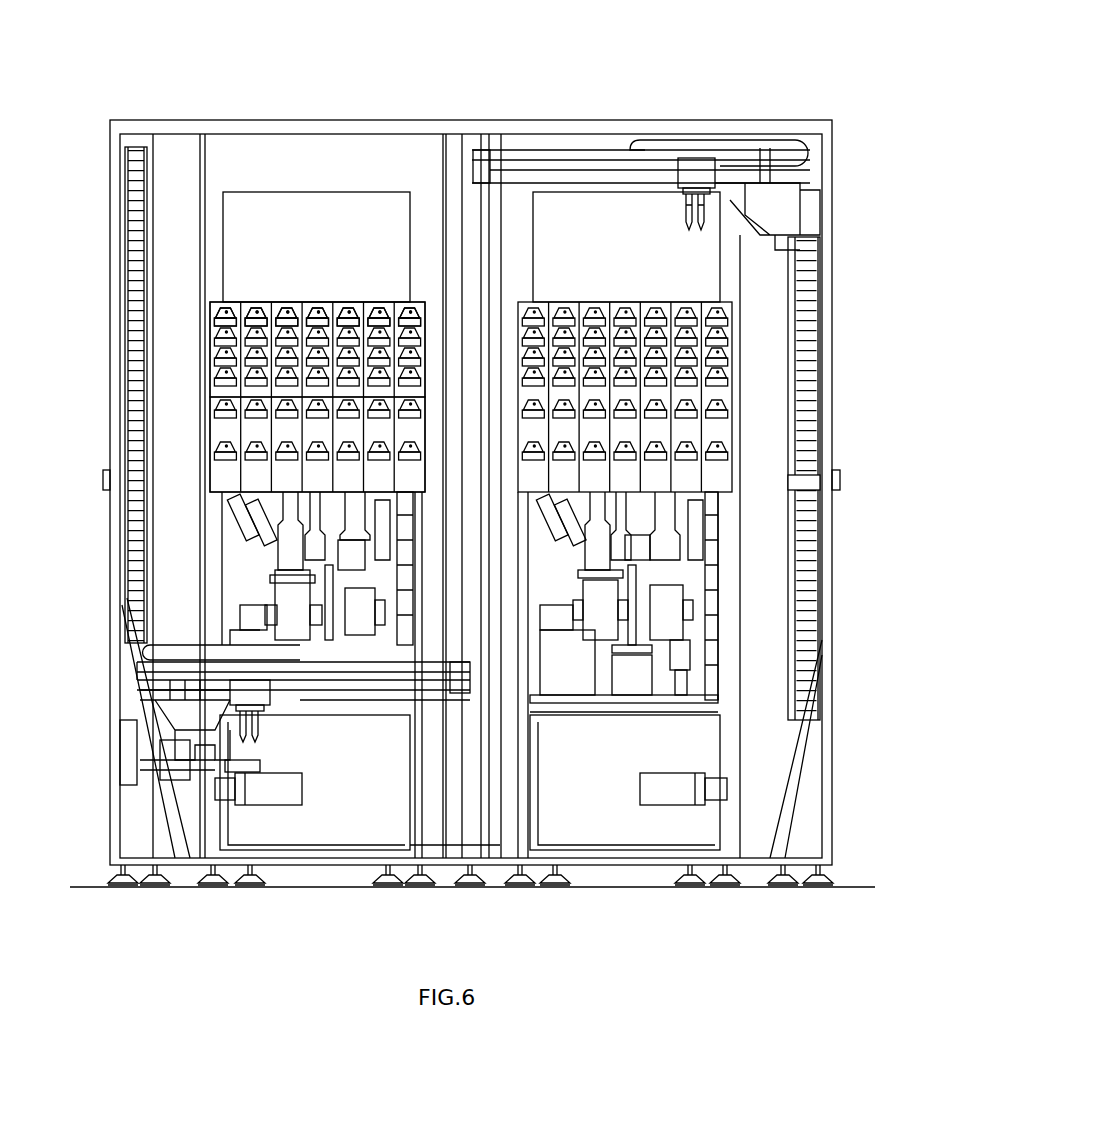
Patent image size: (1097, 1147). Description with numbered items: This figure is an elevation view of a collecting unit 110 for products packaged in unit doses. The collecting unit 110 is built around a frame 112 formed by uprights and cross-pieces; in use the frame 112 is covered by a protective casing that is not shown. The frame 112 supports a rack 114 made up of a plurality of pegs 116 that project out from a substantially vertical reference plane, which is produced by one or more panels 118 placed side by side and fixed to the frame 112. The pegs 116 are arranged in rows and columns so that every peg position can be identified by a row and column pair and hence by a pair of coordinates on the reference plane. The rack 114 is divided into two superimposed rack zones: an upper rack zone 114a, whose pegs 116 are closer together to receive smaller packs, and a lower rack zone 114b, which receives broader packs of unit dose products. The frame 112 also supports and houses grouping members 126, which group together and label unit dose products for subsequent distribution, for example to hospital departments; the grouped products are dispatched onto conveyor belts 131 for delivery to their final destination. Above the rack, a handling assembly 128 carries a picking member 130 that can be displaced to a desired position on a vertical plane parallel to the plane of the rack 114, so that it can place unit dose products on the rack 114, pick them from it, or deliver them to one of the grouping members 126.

The collecting unit 110 is at (545, 283).
The frame 112 is at (205, 546).
The rack 114 is at (236, 372).
The upper rack zone 114a is at (207, 330).
The lower rack zone 114b is at (207, 420).
The pegs 116 is at (290, 308).
The panels 118 is at (218, 466).
The grouping member 126 is at (705, 605).
The handling assembly 128 is at (760, 170).
The picking member 130 is at (685, 212).
The conveyor belts 131 is at (660, 710).